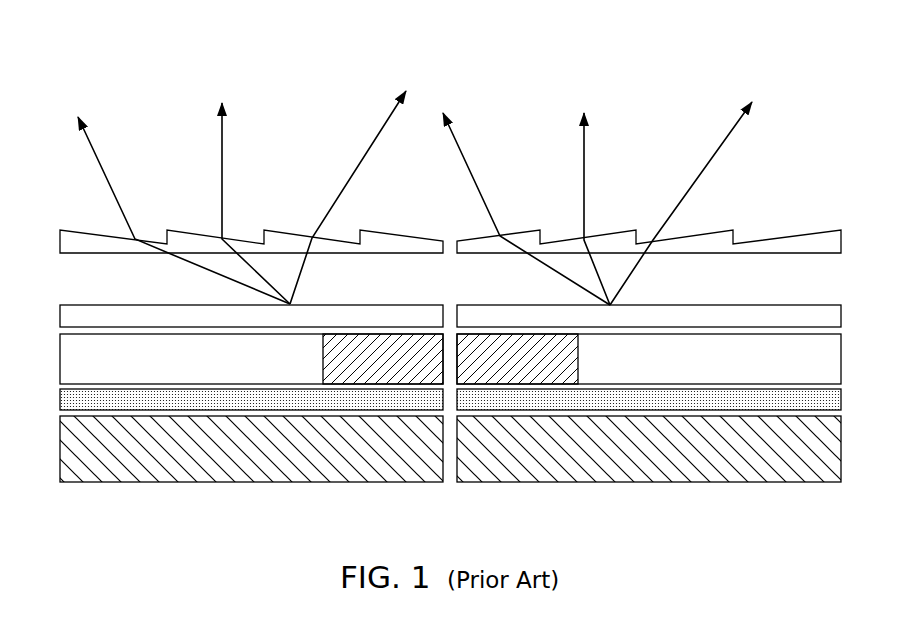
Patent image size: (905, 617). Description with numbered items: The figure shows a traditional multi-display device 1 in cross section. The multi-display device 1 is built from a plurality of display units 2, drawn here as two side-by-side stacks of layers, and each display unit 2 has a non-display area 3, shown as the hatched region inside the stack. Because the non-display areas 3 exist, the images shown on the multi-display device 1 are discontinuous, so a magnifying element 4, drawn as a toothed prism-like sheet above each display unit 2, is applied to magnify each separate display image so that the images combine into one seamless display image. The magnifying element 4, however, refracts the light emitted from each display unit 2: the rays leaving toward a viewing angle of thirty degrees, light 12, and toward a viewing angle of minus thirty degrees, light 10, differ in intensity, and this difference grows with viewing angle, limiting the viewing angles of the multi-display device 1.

The multi-display device 1 is at (52, 62).
The display unit 2 is at (53, 305).
The non-display area 3 is at (369, 370).
The magnifying element 4 is at (62, 241).
The light at the viewing angle of minus 30 degrees 10 is at (382, 120).
The light at the viewing angle of 30 degrees 12 is at (98, 146).